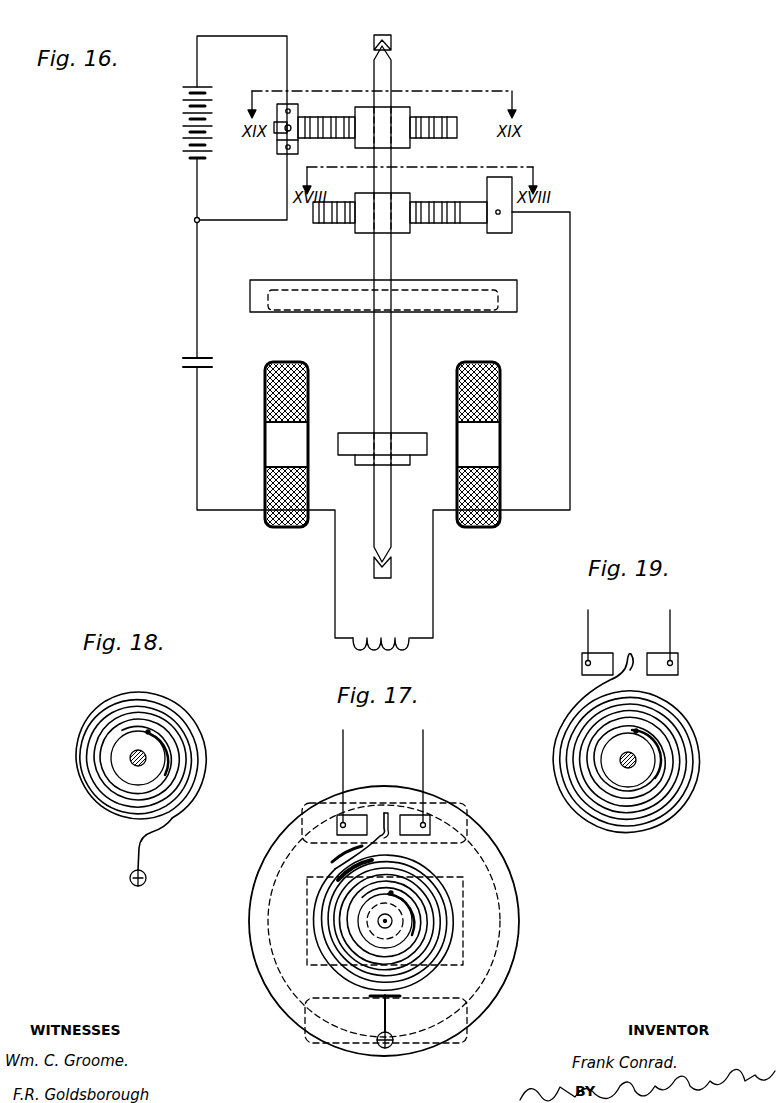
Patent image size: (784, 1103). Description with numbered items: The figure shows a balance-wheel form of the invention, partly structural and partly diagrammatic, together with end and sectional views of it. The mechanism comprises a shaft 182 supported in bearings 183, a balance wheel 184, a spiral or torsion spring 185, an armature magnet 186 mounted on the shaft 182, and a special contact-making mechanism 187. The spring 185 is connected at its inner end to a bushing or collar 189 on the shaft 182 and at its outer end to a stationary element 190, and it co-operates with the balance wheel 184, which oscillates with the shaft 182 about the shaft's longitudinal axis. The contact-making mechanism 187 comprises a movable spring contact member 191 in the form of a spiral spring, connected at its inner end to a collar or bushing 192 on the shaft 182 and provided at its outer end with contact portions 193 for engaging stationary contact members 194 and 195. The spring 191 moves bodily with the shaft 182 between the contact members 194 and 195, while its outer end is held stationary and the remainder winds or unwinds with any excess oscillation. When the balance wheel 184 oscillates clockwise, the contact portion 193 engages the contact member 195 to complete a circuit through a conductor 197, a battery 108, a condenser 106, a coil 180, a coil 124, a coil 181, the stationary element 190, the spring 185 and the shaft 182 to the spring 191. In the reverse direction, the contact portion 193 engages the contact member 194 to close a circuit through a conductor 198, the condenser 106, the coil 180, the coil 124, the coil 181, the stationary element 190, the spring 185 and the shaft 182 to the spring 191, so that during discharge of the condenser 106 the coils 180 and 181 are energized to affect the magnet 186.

In FIG. 16, the condenser 106 is at (252, 360).
In FIG. 16, the battery 108 is at (172, 122).
In FIG. 16, the coil 124 is at (377, 628).
In FIG. 16, the coil 180 is at (265, 433).
In FIG. 17, the coil 180 is at (467, 809).
In FIG. 16, the coil 181 is at (500, 437).
In FIG. 19, the coil 181 is at (543, 705).
In FIG. 17, the coil 181 is at (457, 1033).
In FIG. 16, the shaft 182 is at (391, 345).
In FIG. 18, the shaft 182 is at (130, 757).
In FIG. 19, the shaft 182 is at (638, 758).
In FIG. 17, the shaft 182 is at (382, 923).
In FIG. 16, the bearings 183 is at (391, 36).
In FIG. 16, the balance wheel 184 is at (338, 312).
In FIG. 17, the balance wheel 184 is at (251, 912).
In FIG. 16, the spiral or torsion spring 185 is at (343, 223).
In FIG. 18, the spiral or torsion spring 185 is at (187, 712).
In FIG. 17, the spiral or torsion spring 185 is at (388, 1015).
In FIG. 16, the armature magnet 186 is at (407, 433).
In FIG. 17, the armature magnet 186 is at (463, 890).
In FIG. 16, the contact-making mechanism 187 is at (337, 116).
In FIG. 16, the bushing or collar 189 is at (407, 233).
In FIG. 18, the bushing or collar 189 is at (122, 783).
In FIG. 16, the stationary element 190 is at (488, 188).
In FIG. 18, the stationary element 190 is at (148, 878).
In FIG. 17, the stationary element 190 is at (392, 1049).
In FIG. 16, the movable spring contact member 191 is at (457, 123).
In FIG. 19, the movable spring contact member 191 is at (553, 751).
In FIG. 17, the movable spring contact member 191 is at (333, 867).
In FIG. 16, the collar or bushing 192 is at (410, 112).
In FIG. 19, the collar or bushing 192 is at (652, 738).
In FIG. 17, the collar or bushing 192 is at (407, 922).
In FIG. 16, the contact portions 193 is at (273, 137).
In FIG. 19, the contact portions 193 is at (628, 653).
In FIG. 17, the contact portions 193 is at (376, 788).
In FIG. 16, the stationary contact member 194 is at (282, 153).
In FIG. 19, the stationary contact member 194 is at (582, 664).
In FIG. 17, the stationary contact member 194 is at (337, 820).
In FIG. 16, the stationary contact member 195 is at (288, 104).
In FIG. 19, the stationary contact member 195 is at (678, 665).
In FIG. 17, the stationary contact member 195 is at (427, 820).
In FIG. 16, the conductor 197 is at (236, 36).
In FIG. 17, the conductor 197 is at (425, 743).
In FIG. 16, the conductor 198 is at (252, 221).
In FIG. 17, the conductor 198 is at (343, 742).